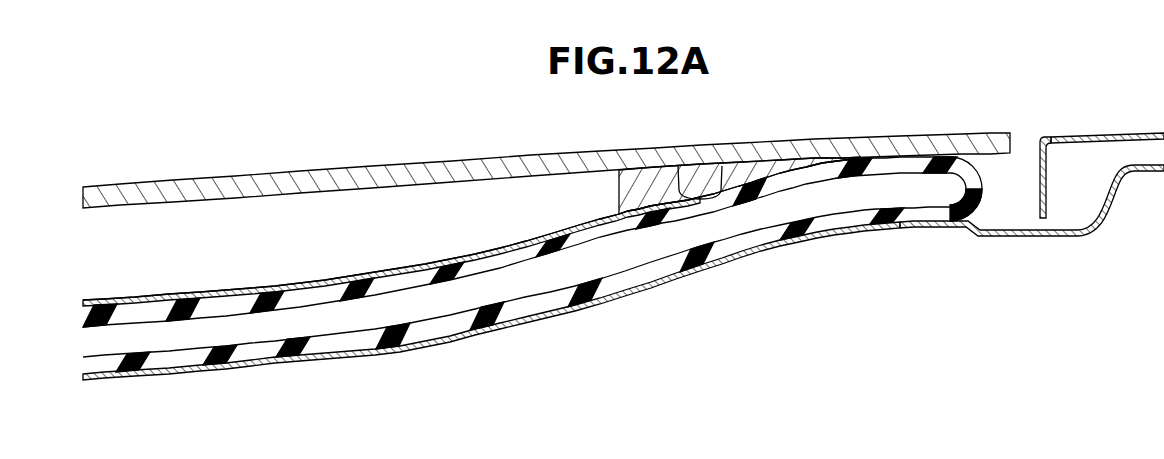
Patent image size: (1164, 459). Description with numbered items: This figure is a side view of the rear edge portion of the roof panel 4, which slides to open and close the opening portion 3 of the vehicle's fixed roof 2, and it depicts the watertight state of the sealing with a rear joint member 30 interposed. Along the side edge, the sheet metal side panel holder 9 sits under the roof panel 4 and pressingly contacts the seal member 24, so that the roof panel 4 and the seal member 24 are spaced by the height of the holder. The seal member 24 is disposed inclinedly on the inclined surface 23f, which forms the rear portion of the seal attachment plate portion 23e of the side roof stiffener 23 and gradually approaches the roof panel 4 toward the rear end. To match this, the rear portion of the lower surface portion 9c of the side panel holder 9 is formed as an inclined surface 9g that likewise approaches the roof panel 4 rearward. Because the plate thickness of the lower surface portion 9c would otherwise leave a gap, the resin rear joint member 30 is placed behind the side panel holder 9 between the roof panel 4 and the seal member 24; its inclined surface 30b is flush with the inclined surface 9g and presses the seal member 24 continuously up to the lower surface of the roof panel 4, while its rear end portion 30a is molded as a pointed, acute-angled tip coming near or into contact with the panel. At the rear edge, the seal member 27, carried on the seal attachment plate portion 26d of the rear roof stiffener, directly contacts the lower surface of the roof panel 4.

The fixed roof 2 is at (1107, 133).
The opening portion 3 is at (1036, 158).
The roof panel 4 is at (481, 166).
The side panel holder 9 is at (317, 251).
The lower surface portion 9c is at (137, 301).
The inclined surface 9g is at (541, 228).
The side roof stiffener 23 is at (368, 351).
The seal attachment plate portion 23e is at (277, 363).
The inclined surface 23f is at (548, 307).
The seal member 24 is at (173, 358).
The seal attachment plate portion 26d is at (933, 224).
The seal member 27 is at (977, 180).
The rear joint member 30 is at (683, 190).
The rear end portion 30a is at (840, 152).
The inclined surface 30b is at (728, 178).